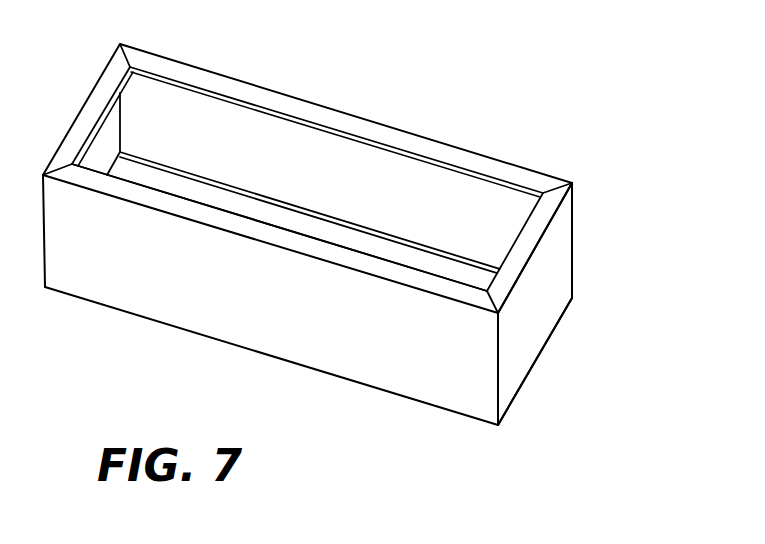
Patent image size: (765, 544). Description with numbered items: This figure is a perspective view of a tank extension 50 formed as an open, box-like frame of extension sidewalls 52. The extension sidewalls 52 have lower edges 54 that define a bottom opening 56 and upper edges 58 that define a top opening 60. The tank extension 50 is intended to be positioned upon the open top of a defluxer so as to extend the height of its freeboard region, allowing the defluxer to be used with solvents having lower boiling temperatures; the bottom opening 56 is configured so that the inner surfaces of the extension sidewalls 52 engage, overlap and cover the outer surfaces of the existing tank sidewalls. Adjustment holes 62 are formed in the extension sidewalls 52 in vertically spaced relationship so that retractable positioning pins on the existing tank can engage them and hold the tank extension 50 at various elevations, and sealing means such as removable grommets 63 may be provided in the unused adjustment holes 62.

The tank extension 50 is at (604, 219).
The extension sidewalls 52 is at (518, 318).
The lower edges 54 is at (222, 351).
The bottom opening 56 is at (315, 234).
The upper edges 58 is at (172, 57).
The top opening 60 is at (262, 132).
The adjustment holes 62 is at (565, 303).
The removable grommets 63 is at (505, 378).